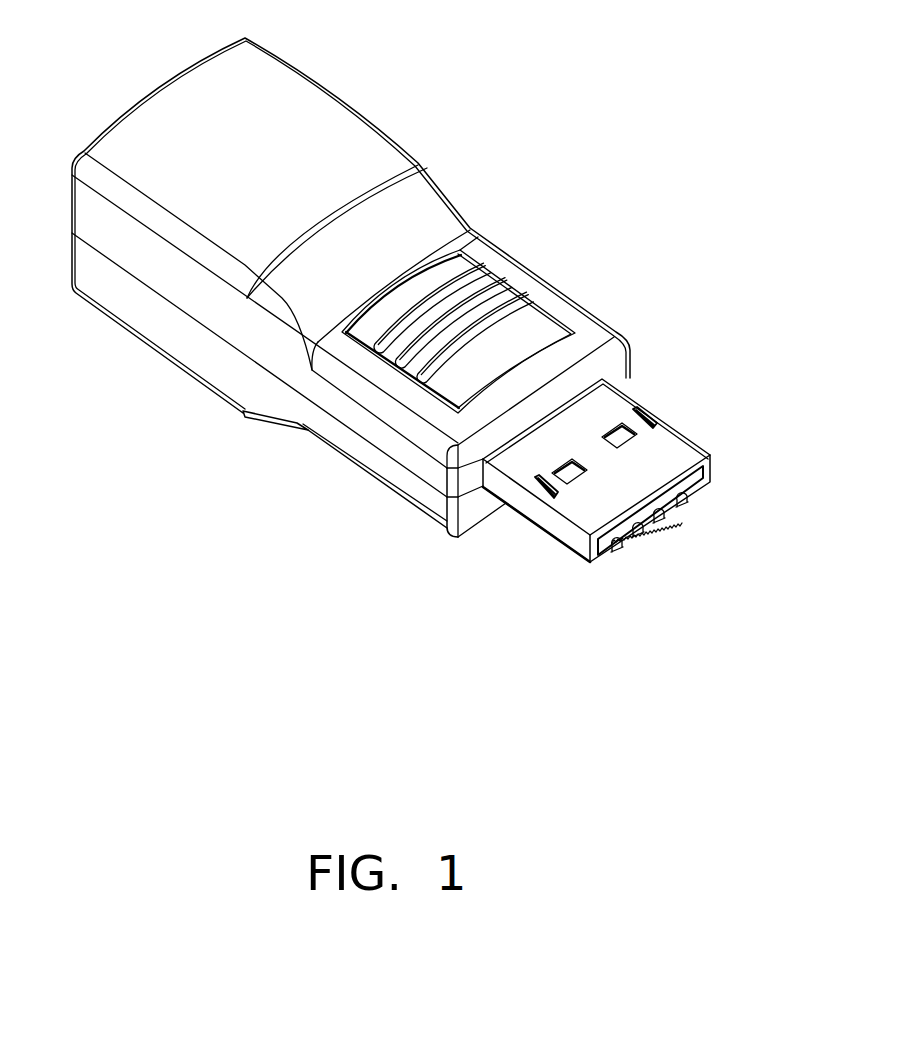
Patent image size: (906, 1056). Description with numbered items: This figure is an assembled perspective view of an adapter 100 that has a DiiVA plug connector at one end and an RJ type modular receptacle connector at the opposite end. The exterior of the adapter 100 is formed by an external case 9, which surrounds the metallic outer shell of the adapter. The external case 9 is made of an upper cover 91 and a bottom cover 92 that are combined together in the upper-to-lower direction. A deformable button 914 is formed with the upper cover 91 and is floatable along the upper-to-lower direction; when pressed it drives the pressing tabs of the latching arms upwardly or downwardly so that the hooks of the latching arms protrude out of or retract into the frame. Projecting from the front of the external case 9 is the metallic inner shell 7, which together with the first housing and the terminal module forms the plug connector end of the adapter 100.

The adapter 100 is at (391, 300).
The external case 9 is at (212, 303).
The upper cover 91 is at (343, 152).
The bottom cover 92 is at (353, 442).
The deformable button 914 is at (510, 343).
The metallic inner shell 7 is at (650, 447).